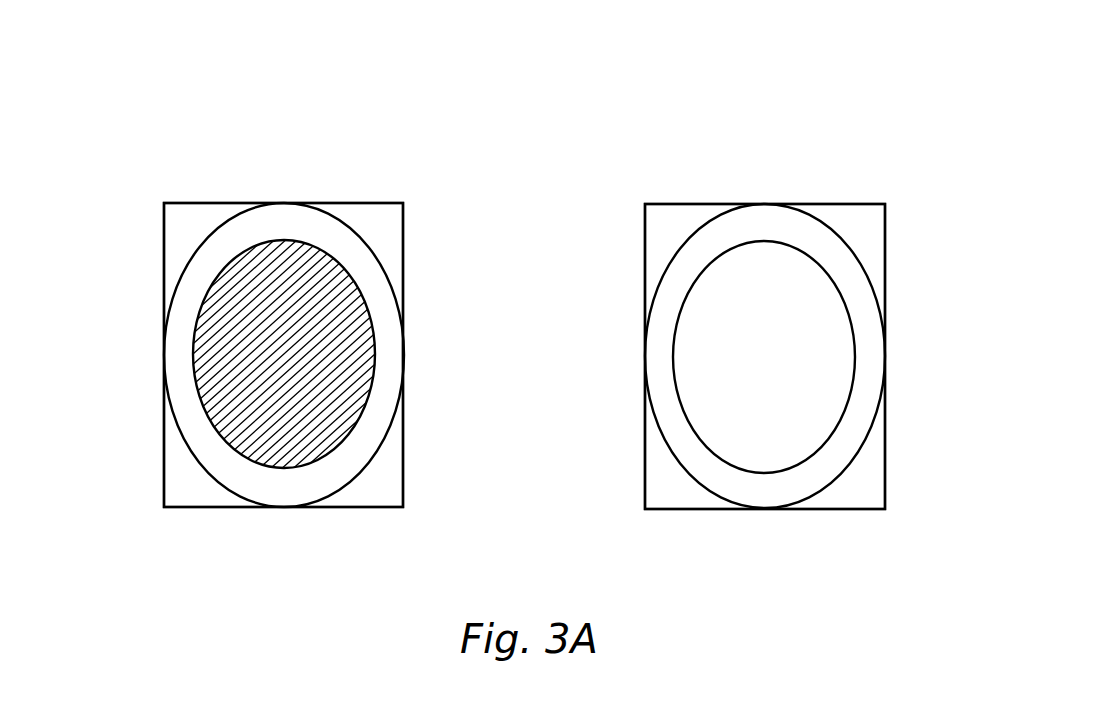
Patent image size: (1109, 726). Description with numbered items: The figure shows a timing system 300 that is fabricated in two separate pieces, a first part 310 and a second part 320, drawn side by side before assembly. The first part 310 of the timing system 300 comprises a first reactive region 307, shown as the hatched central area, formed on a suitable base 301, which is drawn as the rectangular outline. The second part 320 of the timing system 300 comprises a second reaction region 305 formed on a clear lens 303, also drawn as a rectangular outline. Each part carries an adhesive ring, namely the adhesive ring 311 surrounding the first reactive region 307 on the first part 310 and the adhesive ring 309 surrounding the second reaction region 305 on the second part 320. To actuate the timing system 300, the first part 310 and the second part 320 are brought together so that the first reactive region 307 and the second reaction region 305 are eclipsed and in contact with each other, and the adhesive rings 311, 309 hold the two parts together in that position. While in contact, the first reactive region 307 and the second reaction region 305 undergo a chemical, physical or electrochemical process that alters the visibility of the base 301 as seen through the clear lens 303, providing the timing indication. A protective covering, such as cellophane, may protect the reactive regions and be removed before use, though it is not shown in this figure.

The timing system 300 is at (115, 143).
The base 301 is at (404, 260).
The clear lens 303 is at (886, 262).
The second reaction region 305 is at (855, 358).
The first reactive region 307 is at (375, 358).
The adhesive ring 309 is at (855, 247).
The first part 310 is at (403, 528).
The adhesive ring 311 is at (371, 246).
The second part 320 is at (885, 530).